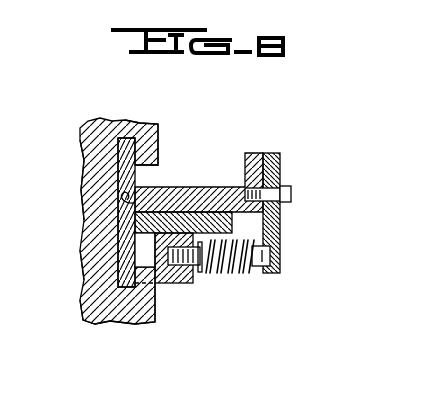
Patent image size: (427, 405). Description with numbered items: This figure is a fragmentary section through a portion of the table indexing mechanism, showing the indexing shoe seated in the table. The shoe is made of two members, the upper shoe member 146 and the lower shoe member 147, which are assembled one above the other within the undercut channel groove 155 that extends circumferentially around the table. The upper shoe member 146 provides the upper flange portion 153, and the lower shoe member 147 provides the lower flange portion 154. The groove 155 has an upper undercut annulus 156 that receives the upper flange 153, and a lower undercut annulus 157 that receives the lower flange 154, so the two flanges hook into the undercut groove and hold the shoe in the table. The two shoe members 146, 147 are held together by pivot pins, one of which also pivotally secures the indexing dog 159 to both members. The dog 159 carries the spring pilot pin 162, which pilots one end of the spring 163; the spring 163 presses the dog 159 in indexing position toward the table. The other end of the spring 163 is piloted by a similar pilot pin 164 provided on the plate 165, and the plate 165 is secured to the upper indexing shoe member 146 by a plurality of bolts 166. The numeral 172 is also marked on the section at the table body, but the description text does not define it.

The upper shoe member 146 is at (193, 187).
The lower shoe member 147 is at (232, 228).
The upper flange portion 153 is at (136, 177).
The lower flange portion 154 is at (118, 250).
The undercut channel groove 155 is at (133, 203).
The upper undercut annulus 156 is at (157, 149).
The lower undercut annulus 157 is at (118, 297).
The indexing dog 159 is at (183, 284).
The spring pilot pin 162 is at (240, 275).
The spring 163 is at (207, 275).
The pilot pin 164 is at (271, 255).
The plate 165 is at (280, 170).
The bolts 166 is at (292, 194).
The housing body 172 is at (103, 308).